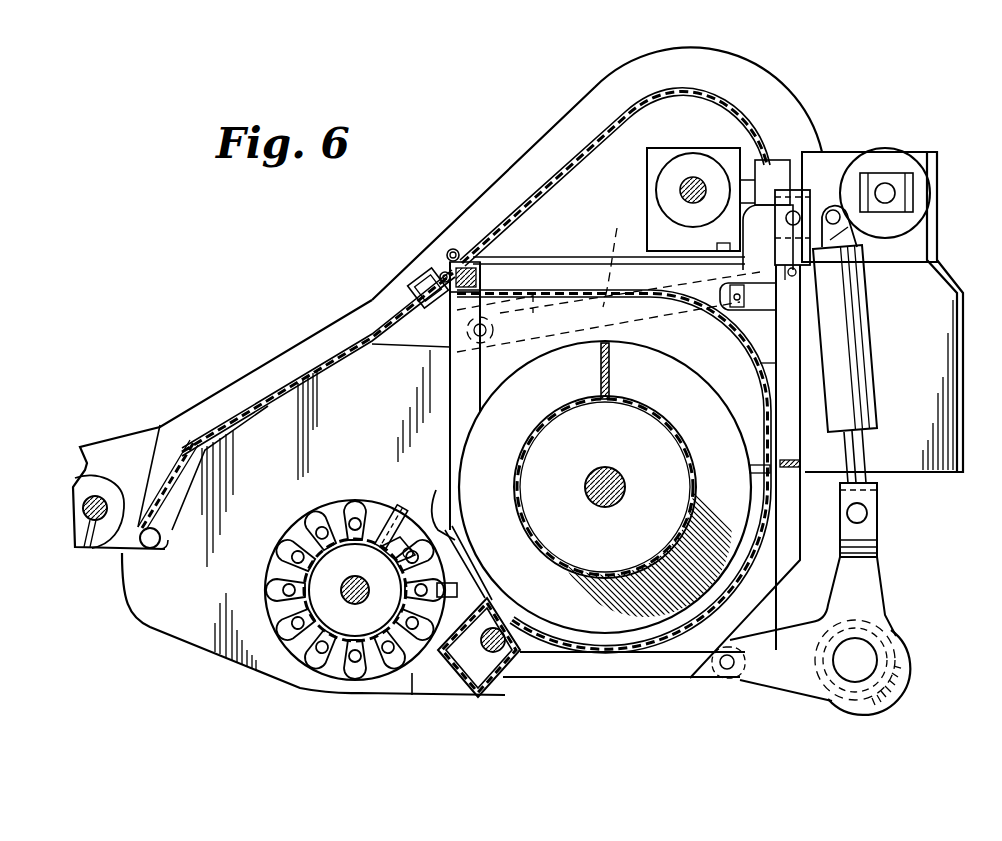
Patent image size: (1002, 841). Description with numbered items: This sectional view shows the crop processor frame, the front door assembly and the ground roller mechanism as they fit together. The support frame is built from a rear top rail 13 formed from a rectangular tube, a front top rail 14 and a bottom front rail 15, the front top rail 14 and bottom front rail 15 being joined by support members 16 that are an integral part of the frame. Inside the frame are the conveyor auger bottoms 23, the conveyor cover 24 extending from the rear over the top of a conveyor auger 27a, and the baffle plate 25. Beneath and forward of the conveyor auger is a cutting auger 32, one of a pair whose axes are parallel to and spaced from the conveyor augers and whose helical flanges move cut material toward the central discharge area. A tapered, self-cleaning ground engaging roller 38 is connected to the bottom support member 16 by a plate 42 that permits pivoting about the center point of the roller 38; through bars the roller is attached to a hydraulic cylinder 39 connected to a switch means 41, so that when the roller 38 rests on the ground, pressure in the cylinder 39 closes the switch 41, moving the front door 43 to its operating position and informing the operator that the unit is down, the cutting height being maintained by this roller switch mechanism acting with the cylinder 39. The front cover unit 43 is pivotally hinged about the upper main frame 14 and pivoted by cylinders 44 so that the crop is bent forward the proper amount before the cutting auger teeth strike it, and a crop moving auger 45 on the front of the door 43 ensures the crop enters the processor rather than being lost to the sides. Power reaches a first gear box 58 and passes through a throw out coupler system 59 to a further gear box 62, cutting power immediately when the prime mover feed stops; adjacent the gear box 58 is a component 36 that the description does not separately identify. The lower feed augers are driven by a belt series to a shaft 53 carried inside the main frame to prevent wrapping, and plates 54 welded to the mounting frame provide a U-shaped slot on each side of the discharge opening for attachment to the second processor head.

The rear top rail 13 is at (800, 272).
The front top rail 14 is at (480, 275).
The bottom front rail 15 is at (468, 662).
The support member 16 is at (643, 667).
The conveyor auger bottom 23 is at (672, 655).
The conveyor cover 24 is at (767, 360).
The baffle plate 25 is at (440, 513).
The conveyor auger 27a is at (710, 383).
The cutting auger 32 is at (375, 487).
The roller 36 is at (887, 185).
The ground engaging roller 38 is at (903, 657).
The hydraulic cylinder 39 is at (867, 347).
The switch means 41 is at (772, 320).
The plate 42 is at (883, 590).
The front cover unit 43 is at (290, 363).
The cylinder 44 is at (608, 276).
The crop moving auger 45 is at (121, 478).
The shaft 53 is at (497, 697).
The plate 54 is at (927, 413).
The first gear box 58 is at (925, 150).
The throw out coupler system 59 is at (763, 150).
The gear box 62 is at (720, 148).